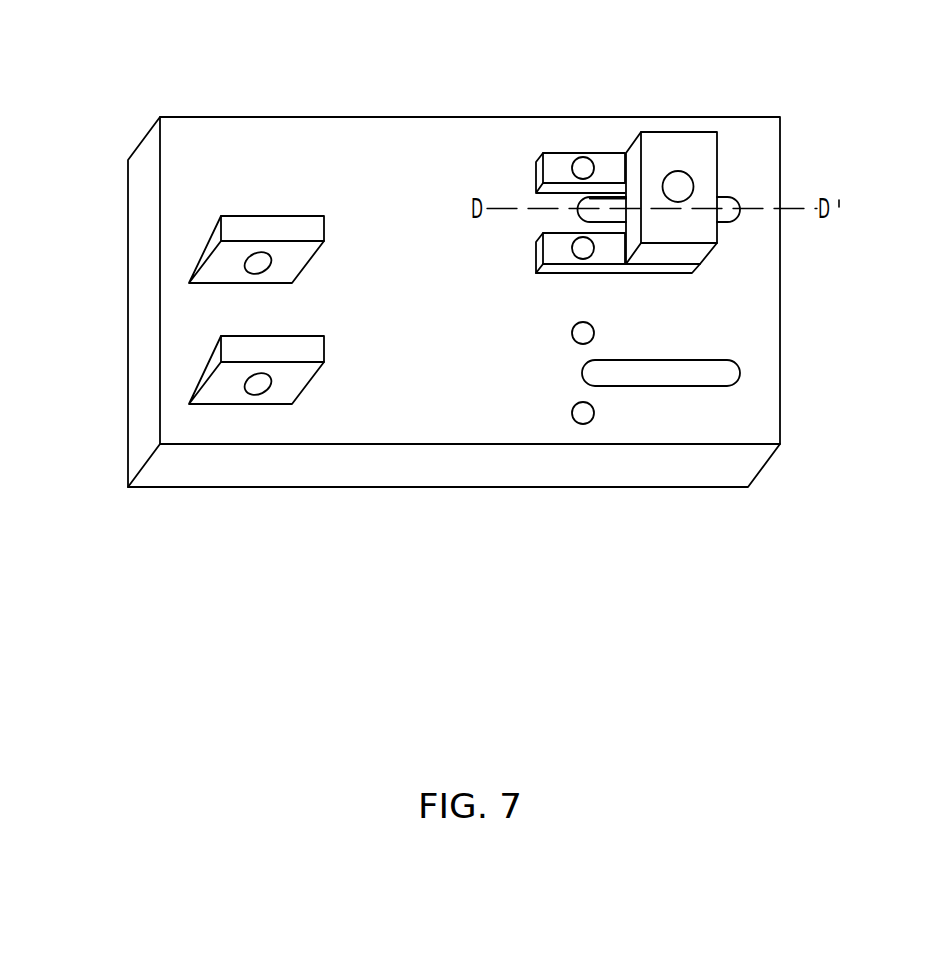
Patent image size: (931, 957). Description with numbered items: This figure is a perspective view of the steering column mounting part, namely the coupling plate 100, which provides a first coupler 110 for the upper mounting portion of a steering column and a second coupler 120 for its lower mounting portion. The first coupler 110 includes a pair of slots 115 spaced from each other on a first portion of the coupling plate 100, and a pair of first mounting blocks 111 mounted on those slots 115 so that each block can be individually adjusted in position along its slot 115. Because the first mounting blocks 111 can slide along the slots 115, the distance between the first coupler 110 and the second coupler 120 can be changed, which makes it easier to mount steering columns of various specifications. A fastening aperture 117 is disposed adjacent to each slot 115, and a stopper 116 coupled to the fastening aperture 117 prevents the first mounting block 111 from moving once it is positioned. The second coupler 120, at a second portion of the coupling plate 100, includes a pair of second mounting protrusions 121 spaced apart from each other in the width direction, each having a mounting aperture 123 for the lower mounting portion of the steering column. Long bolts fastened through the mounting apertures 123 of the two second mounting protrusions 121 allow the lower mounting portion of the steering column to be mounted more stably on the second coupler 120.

The coupling plate 100 is at (287, 130).
The first coupler 110 is at (668, 146).
The first mounting block 111 is at (707, 145).
The slot 115 is at (733, 210).
The stopper 116 is at (551, 240).
The fastening aperture 117 is at (573, 338).
The second coupler 120 is at (250, 445).
The second mounting protrusion 121 is at (198, 259).
The mounting aperture 123 is at (254, 393).